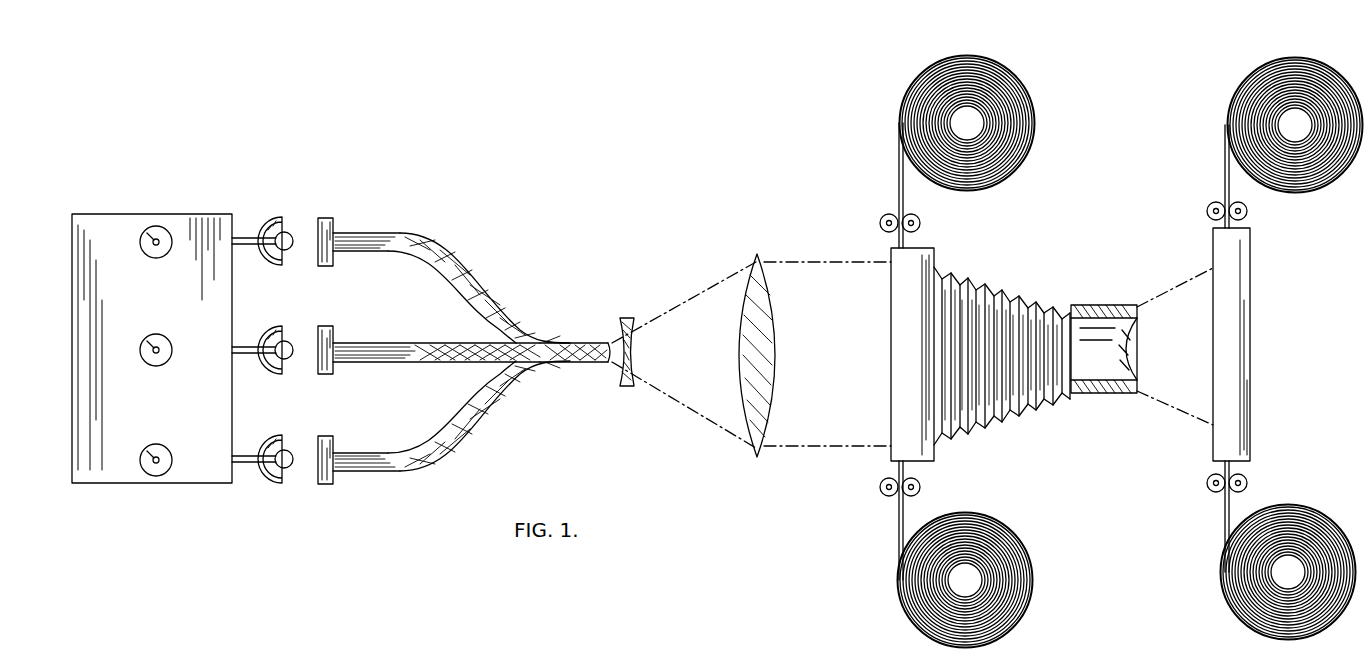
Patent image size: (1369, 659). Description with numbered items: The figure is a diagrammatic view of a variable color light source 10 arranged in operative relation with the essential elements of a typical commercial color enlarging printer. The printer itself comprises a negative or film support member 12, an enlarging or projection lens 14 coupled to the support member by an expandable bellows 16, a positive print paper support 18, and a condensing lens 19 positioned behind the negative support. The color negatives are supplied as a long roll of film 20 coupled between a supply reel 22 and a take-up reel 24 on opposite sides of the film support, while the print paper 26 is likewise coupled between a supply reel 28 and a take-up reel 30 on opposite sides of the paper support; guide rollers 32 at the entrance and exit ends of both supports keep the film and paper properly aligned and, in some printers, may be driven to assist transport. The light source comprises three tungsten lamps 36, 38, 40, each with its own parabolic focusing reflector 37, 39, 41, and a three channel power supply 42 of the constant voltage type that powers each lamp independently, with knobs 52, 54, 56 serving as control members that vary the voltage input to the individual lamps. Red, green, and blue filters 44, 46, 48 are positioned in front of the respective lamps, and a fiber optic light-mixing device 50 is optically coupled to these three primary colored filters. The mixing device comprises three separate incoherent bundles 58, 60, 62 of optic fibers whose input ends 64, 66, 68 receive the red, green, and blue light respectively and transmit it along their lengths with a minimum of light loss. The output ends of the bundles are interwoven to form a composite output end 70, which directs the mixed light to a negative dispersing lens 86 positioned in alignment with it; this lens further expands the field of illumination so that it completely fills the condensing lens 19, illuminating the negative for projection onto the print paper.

The variable color light source 10 is at (455, 216).
The negative or film support member 12 is at (902, 325).
The enlarging or projection lens 14 is at (1098, 394).
The expandable bellows 16 is at (1005, 407).
The positive print paper support 18 is at (1250, 294).
The condensing lens 19 is at (749, 262).
The roll of film 20 is at (899, 528).
The supply reel 22 is at (968, 62).
The take-up reel 24 is at (905, 580).
The print paper 26 is at (1225, 528).
The supply reel 28 is at (1290, 62).
The take-up reel 30 is at (1230, 578).
The guide rollers 32 is at (882, 216).
The tungsten lamp 36 is at (288, 250).
The parabolic focusing reflector 37 is at (268, 226).
The tungsten lamp 38 is at (288, 359).
The parabolic focusing reflector 39 is at (268, 336).
The tungsten lamp 40 is at (289, 468).
The parabolic focusing reflector 41 is at (268, 446).
The three channel power supply 42 is at (112, 468).
The red filter 44 is at (322, 217).
The green filter 46 is at (323, 326).
The blue filter 48 is at (322, 436).
The fiber optic light-mixing device 50 is at (544, 340).
The knob 52 is at (160, 238).
The knob 54 is at (150, 345).
The knob 56 is at (150, 455).
The fiber optic bundle 58 is at (456, 248).
The fiber optic bundle 60 is at (420, 342).
The fiber optic bundle 62 is at (480, 438).
The input end 64 is at (340, 236).
The input end 66 is at (338, 344).
The input end 68 is at (338, 460).
The composite output end 70 is at (607, 364).
The negative dispersing lens 86 is at (627, 388).